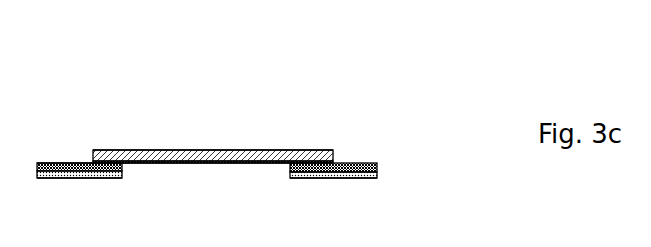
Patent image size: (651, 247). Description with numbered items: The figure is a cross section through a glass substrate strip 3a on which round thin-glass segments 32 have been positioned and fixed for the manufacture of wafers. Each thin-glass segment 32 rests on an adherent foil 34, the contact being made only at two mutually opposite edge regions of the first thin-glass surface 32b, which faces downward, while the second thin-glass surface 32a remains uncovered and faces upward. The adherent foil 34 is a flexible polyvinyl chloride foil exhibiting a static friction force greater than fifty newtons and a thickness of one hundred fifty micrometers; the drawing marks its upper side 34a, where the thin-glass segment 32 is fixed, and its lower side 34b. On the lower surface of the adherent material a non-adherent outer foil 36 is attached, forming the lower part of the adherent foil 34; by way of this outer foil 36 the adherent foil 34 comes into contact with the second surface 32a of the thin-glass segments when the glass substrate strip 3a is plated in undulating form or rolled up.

The glass substrate strip 3a is at (170, 90).
The thin-glass segment 32 is at (333, 158).
The second thin-glass surface 32a is at (170, 150).
The first thin-glass surface 32b is at (160, 163).
The adherent foil 34 is at (381, 163).
The top surface of support layer 34a is at (60, 161).
The bottom surface of support layer 34b is at (70, 178).
The outer foil 36 is at (356, 173).